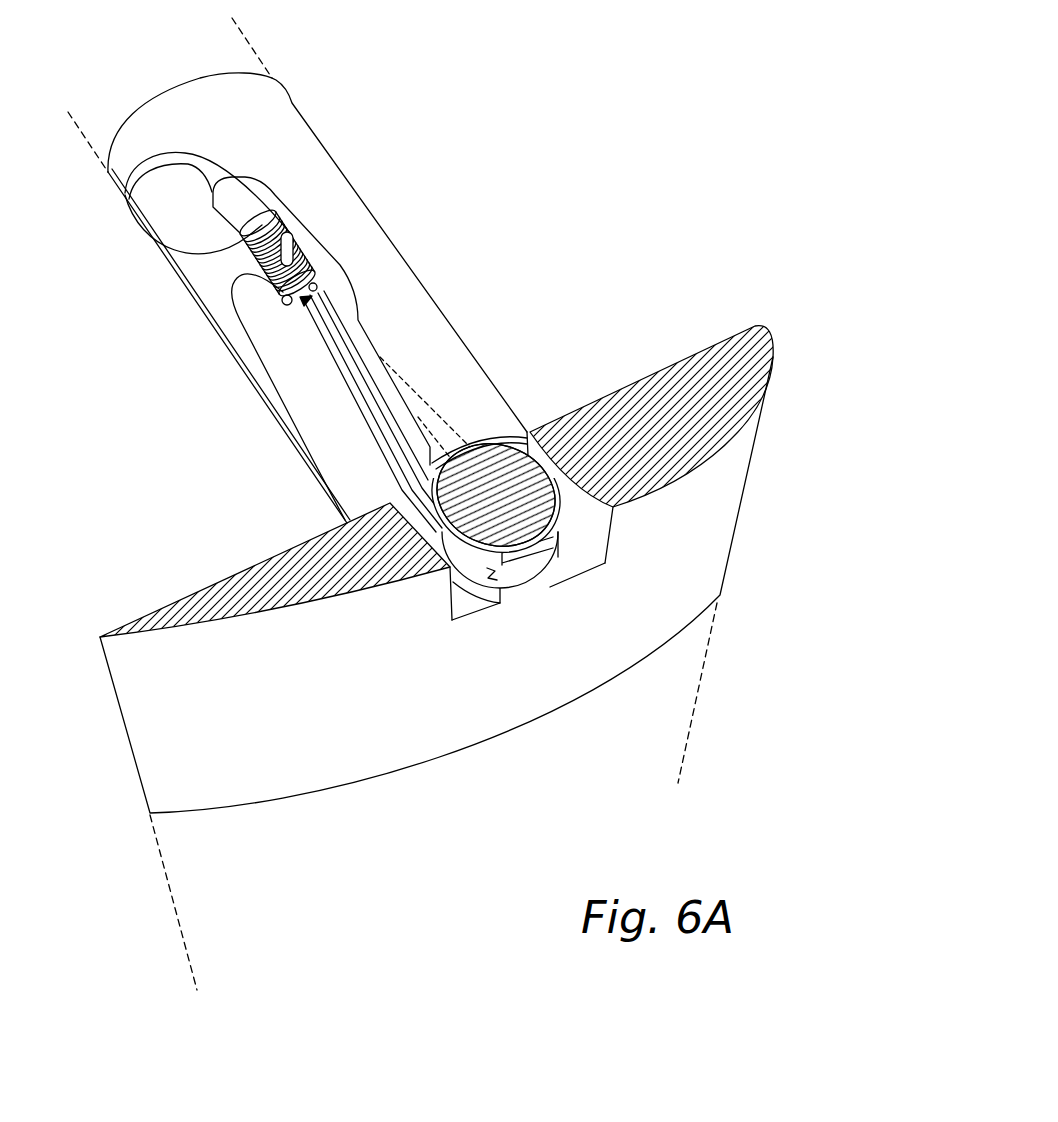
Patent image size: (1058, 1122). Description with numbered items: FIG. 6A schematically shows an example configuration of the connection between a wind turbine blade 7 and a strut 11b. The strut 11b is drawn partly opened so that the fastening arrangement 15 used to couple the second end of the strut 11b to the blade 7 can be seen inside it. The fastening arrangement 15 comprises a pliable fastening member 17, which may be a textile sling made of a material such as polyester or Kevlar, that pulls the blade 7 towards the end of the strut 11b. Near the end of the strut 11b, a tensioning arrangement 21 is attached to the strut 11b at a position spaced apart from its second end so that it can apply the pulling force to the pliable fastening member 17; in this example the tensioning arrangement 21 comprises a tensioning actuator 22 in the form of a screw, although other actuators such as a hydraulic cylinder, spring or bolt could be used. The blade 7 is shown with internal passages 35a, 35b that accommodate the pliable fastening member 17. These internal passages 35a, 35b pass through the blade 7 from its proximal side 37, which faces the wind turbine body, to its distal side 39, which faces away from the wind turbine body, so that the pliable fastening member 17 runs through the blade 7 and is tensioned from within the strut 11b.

The blade 7 is at (720, 500).
The strut 11b is at (303, 147).
The fastening arrangement 15 is at (268, 320).
The pliable fastening member 17 is at (520, 570).
The tensioning arrangement 21 is at (223, 257).
The tensioning actuator 22 is at (260, 268).
The internal passage 35a is at (463, 603).
The internal passage 35b is at (587, 533).
The proximal side 37 is at (633, 372).
The distal side 39 is at (380, 720).